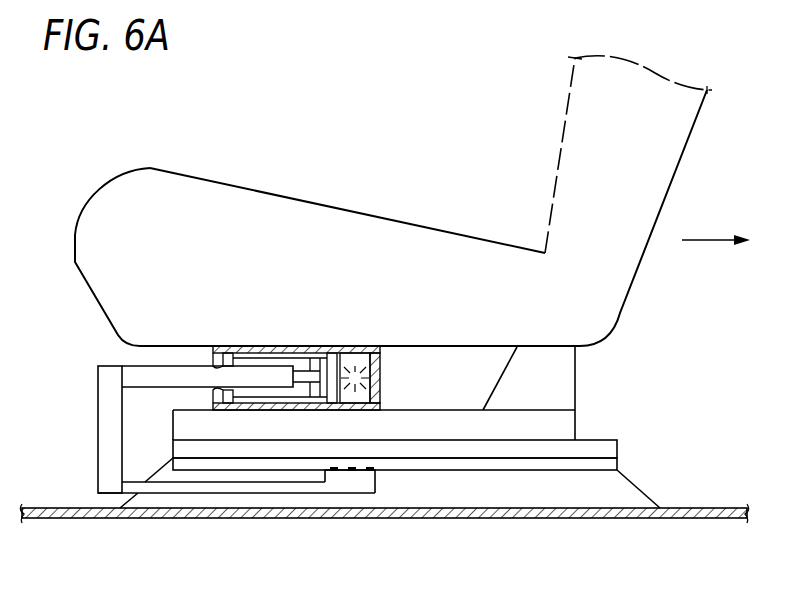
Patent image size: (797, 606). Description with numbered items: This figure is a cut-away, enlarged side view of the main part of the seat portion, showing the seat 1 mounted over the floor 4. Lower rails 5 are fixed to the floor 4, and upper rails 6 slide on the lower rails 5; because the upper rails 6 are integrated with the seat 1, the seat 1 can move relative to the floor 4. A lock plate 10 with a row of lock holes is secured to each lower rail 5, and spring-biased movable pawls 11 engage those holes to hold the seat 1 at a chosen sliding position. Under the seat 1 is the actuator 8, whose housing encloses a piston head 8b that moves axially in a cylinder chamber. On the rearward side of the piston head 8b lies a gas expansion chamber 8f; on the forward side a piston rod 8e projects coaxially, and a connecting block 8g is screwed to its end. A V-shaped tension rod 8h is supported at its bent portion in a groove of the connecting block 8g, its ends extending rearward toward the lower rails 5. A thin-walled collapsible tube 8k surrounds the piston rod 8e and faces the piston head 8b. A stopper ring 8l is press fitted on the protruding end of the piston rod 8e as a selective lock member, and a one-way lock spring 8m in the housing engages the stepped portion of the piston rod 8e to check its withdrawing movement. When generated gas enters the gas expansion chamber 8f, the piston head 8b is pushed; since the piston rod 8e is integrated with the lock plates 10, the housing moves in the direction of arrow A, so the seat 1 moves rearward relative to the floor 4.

The seat 1 is at (337, 212).
The arrow A is at (707, 240).
The floor 4 is at (637, 519).
The lower rail 5 is at (619, 452).
The upper rail 6 is at (570, 425).
The actuator 8 is at (305, 345).
The piston head 8b is at (343, 350).
The piston rod 8e is at (318, 352).
The gas expansion chamber 8f is at (376, 348).
The connecting block 8g is at (107, 423).
The tension rod 8h is at (205, 489).
The collapsible tube 8k is at (291, 346).
The stopper ring 8l is at (214, 358).
The one-way lock spring 8m is at (236, 347).
The lock plate 10 is at (568, 471).
The movable pawl 11 is at (352, 483).